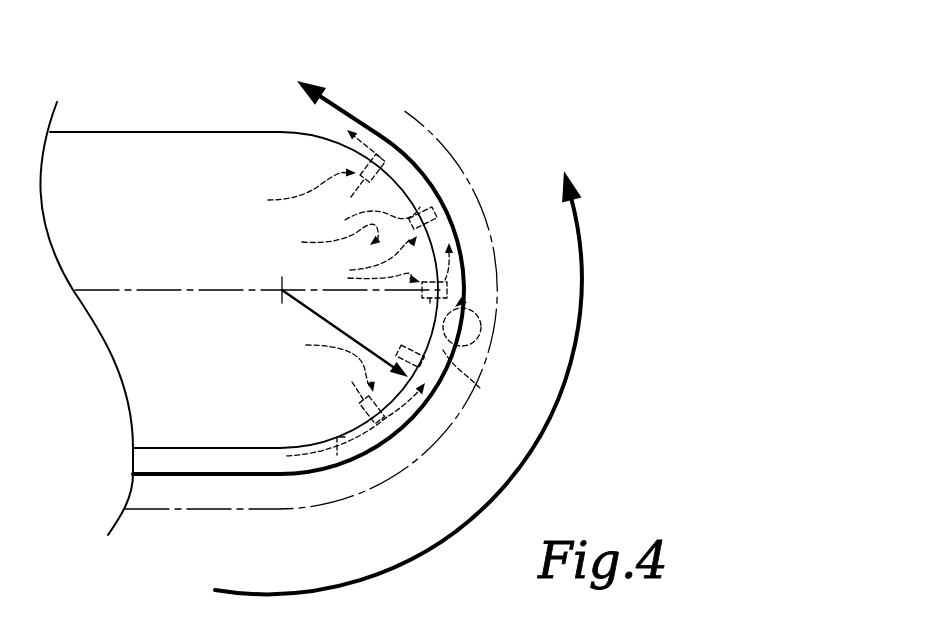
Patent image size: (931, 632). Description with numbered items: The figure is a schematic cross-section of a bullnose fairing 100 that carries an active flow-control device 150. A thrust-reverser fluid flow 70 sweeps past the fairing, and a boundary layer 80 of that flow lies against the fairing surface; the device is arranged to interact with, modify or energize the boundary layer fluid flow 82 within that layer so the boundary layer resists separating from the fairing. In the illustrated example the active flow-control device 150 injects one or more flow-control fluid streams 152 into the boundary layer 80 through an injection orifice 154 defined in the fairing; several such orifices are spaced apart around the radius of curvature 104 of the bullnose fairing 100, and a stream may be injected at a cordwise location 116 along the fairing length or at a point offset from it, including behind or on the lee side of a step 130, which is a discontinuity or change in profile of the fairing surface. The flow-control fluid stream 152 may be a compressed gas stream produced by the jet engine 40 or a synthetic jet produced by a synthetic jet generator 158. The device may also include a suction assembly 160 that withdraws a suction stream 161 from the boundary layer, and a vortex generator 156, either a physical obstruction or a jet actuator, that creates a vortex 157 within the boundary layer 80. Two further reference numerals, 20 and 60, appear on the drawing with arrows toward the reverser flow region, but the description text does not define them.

The gas turbine engine 20 is at (646, 105).
The jet engine 40 is at (676, 143).
The combustor section 60 is at (702, 190).
The thrust-reverser fluid flow 70 is at (566, 398).
The boundary layer 80 is at (226, 522).
The boundary layer fluid flow 82 is at (262, 474).
The bullnose fairing 100 is at (141, 120).
The radius of curvature 104 is at (300, 305).
The cordwise location 116 is at (167, 290).
The step 130 is at (338, 448).
The active flow-control device 150 is at (341, 275).
The flow-control fluid stream 152 is at (390, 143).
The injection orifice 154 is at (365, 160).
The vortex generator 156 is at (480, 389).
The vortex 157 is at (487, 336).
The synthetic jet generator 158 is at (365, 172).
The suction assembly 160 is at (363, 219).
The suction stream 161 is at (323, 240).